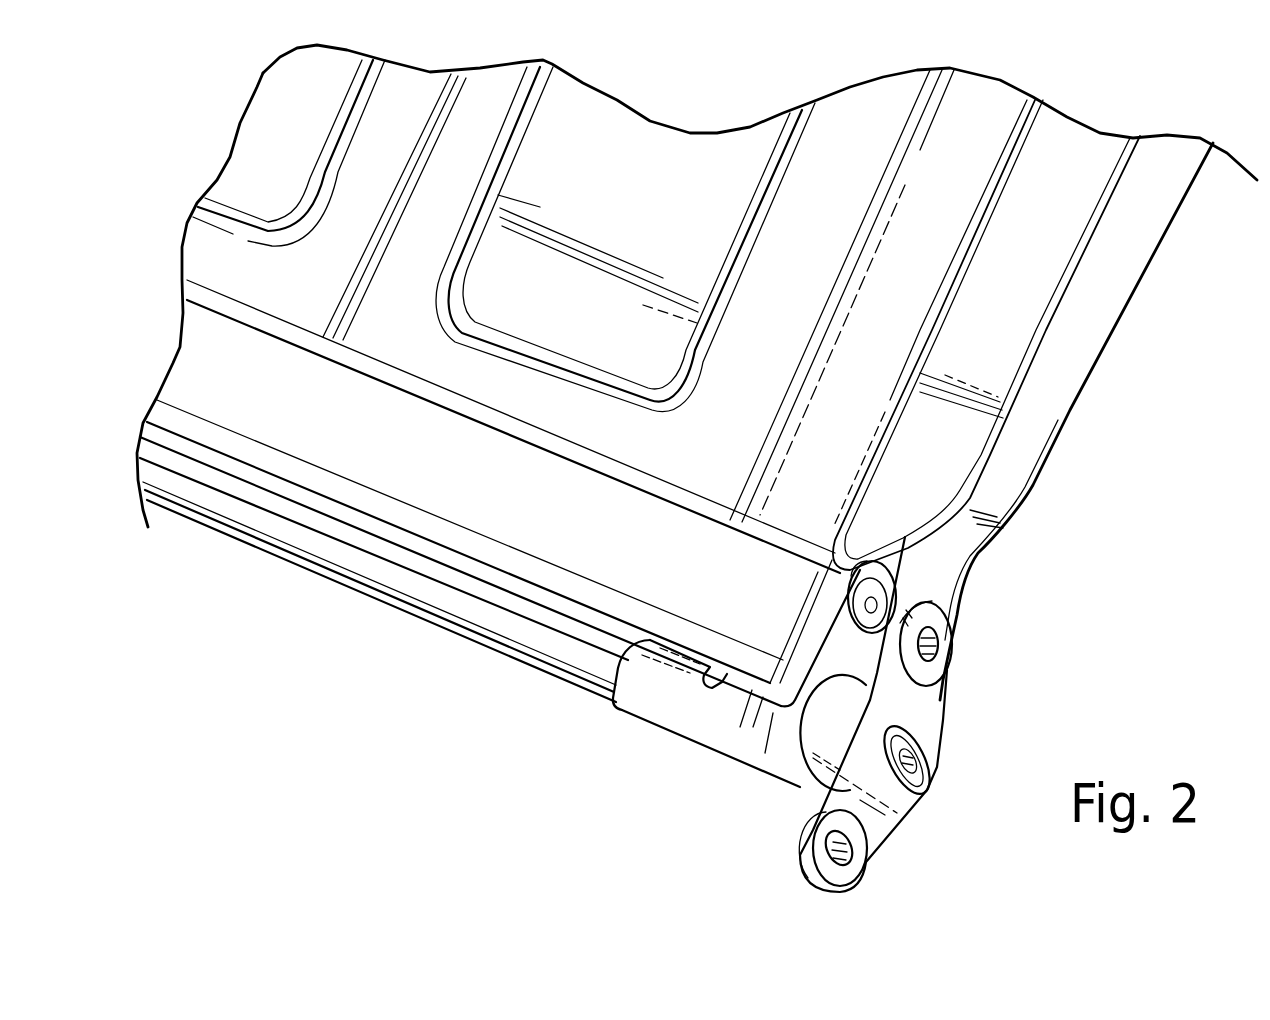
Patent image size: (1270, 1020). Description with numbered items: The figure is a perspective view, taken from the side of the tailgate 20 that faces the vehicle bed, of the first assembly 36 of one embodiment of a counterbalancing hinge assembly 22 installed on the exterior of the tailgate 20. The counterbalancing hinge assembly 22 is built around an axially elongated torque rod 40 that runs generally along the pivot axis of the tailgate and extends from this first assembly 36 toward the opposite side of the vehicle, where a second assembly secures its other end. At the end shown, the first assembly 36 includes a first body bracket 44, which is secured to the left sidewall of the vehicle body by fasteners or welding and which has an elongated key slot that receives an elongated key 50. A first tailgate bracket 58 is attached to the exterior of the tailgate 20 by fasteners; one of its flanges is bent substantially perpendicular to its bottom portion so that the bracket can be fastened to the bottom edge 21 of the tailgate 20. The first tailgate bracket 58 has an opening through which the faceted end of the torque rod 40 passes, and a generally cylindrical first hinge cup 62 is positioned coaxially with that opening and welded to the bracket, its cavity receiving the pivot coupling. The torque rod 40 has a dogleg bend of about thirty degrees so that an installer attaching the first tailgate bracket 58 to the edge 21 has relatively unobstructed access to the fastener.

The tailgate 20 is at (853, 433).
The bottom edge 21 is at (423, 540).
The torque rod 40 is at (310, 543).
The counterbalancing hinge assembly 22 is at (447, 758).
The first assembly 36 is at (646, 811).
The first tailgate bracket 58 is at (638, 705).
The first hinge cup 62 is at (815, 748).
The first body bracket 44 is at (870, 828).
The elongated key 50 is at (917, 742).